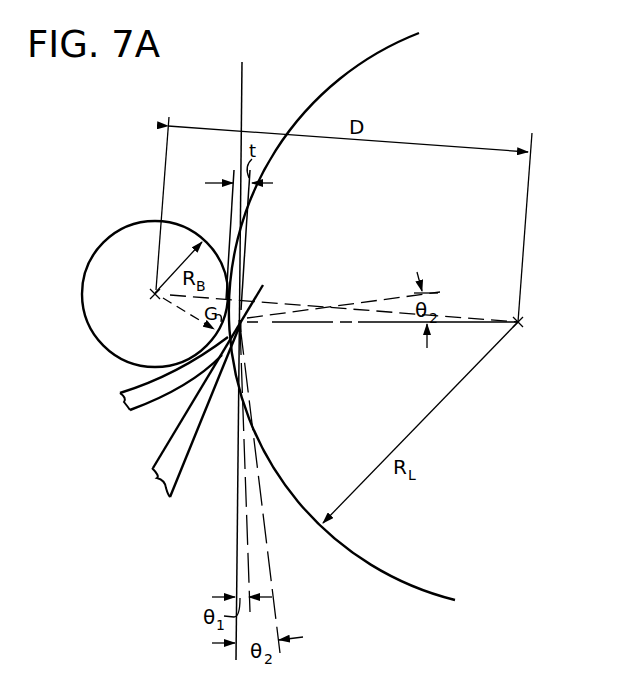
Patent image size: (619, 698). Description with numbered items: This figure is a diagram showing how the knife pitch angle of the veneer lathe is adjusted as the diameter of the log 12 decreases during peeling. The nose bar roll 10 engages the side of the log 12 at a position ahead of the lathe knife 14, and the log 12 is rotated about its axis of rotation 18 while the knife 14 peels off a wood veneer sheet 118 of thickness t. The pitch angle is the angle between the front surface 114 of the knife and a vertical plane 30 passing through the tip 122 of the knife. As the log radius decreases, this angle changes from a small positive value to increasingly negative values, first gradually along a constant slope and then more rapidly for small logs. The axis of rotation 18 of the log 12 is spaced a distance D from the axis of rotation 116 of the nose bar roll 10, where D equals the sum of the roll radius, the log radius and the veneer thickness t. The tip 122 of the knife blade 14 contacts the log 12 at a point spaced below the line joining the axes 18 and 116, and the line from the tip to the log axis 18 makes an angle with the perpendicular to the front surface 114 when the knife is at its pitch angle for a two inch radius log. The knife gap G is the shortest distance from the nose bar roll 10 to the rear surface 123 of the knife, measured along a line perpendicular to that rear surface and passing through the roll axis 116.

The nose bar roll 10 is at (118, 228).
The log 12 is at (356, 66).
The lathe knife 14 is at (185, 432).
The axis of rotation 18 is at (522, 319).
The vertical plane 30 is at (243, 82).
The front surface 114 is at (240, 353).
The axis of rotation of nose bar roll 116 is at (155, 292).
The wood veneer sheet 118 is at (185, 378).
The tip 122 is at (250, 308).
The rear surface 123 is at (162, 452).